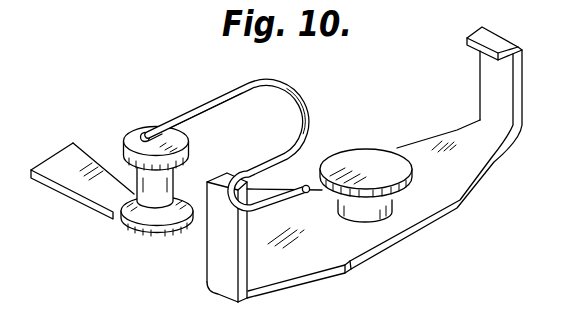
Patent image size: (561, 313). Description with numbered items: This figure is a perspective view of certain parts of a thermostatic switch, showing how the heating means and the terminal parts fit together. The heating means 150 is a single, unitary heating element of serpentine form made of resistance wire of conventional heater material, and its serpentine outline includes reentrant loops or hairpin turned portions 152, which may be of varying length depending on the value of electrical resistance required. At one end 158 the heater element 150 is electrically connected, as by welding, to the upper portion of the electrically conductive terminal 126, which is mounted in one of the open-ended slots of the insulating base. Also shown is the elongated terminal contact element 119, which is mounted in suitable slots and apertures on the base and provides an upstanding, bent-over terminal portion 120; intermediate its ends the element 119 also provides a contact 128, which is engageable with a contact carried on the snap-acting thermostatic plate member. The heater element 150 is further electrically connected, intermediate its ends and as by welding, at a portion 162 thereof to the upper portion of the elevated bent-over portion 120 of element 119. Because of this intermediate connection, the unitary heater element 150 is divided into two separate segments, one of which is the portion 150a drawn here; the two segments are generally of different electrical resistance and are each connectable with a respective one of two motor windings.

The terminal contact element 119 is at (434, 201).
The upstanding bent-over terminal portion 120 is at (223, 178).
The terminal 126 is at (60, 158).
The contact 128 is at (365, 154).
The heating means 150 is at (255, 130).
The portion of the heating element 150a is at (222, 68).
The reentrant loop 152 is at (301, 102).
The end of heater element 158 is at (175, 117).
The portion of heater element 162 is at (216, 228).